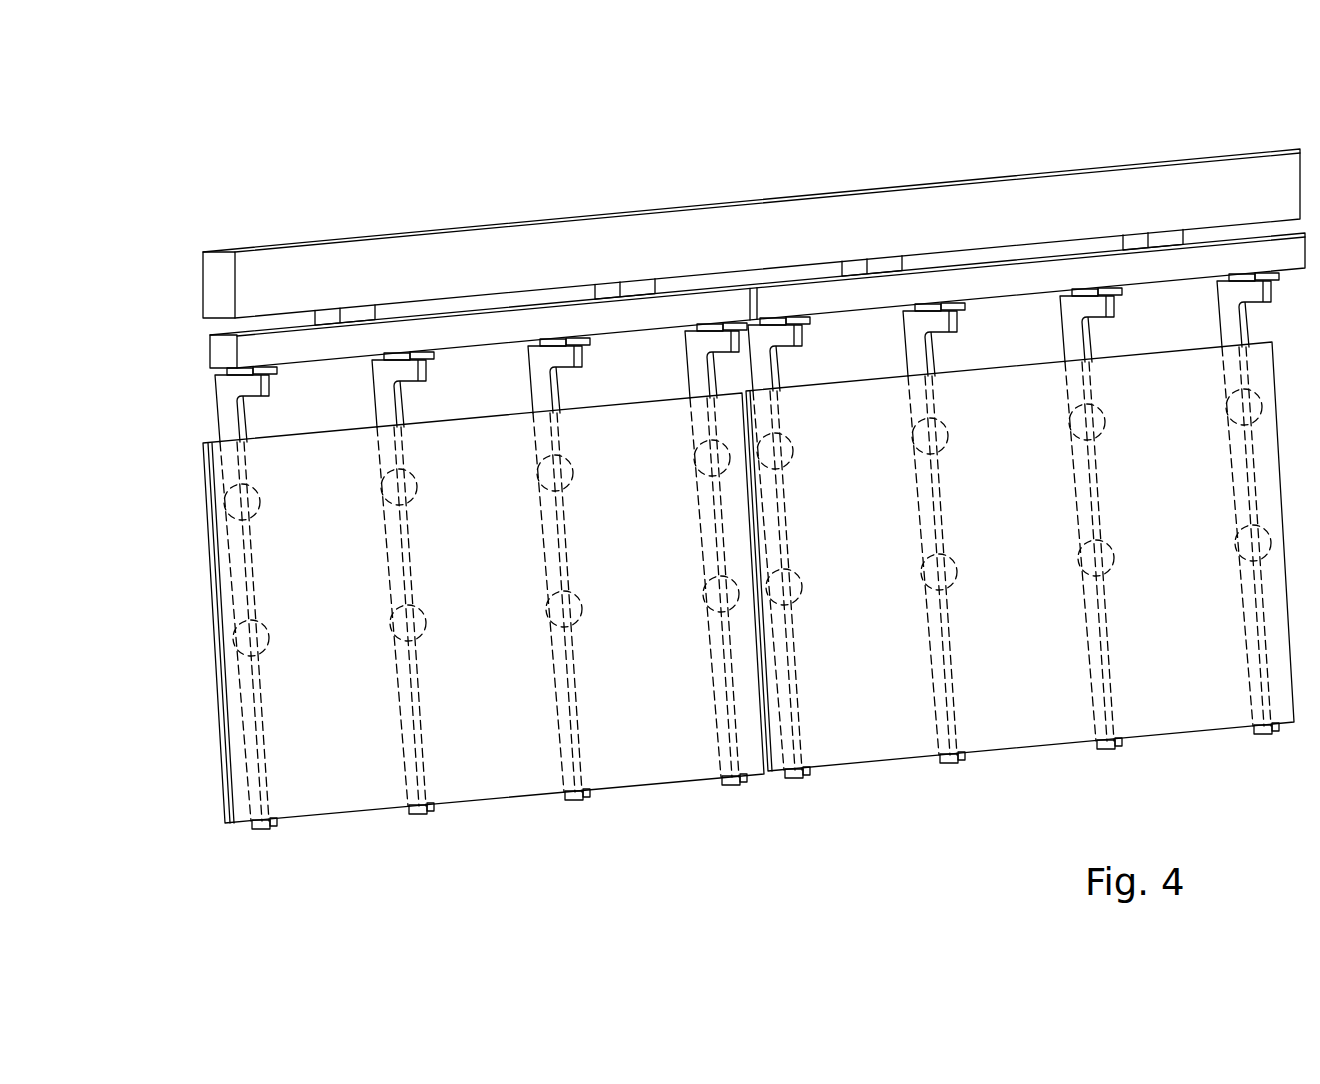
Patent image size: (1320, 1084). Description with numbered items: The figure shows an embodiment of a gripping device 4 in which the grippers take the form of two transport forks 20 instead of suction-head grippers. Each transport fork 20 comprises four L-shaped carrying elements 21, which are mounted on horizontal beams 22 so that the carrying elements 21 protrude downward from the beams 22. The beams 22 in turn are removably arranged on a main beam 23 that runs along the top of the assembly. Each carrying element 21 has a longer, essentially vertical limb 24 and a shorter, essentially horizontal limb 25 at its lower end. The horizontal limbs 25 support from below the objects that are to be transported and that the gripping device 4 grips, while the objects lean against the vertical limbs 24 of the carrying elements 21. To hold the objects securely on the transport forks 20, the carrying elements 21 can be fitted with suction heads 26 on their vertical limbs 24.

The gripping device 4 is at (651, 192).
The transport fork 20 is at (507, 817).
The L-shaped carrying element 21 is at (209, 428).
The horizontal beam 22 is at (470, 330).
The main beam 23 is at (840, 222).
The vertical limb 24 is at (222, 391).
The horizontal limb 25 is at (266, 831).
The suction head 26 is at (228, 519).